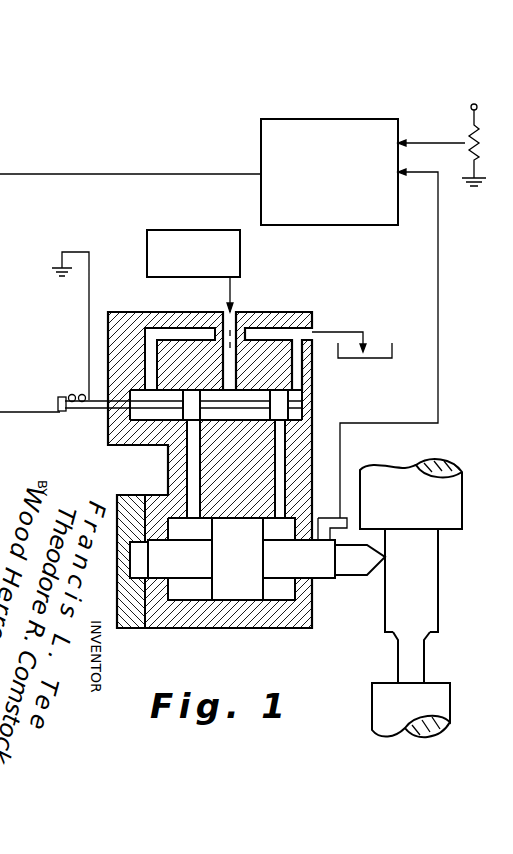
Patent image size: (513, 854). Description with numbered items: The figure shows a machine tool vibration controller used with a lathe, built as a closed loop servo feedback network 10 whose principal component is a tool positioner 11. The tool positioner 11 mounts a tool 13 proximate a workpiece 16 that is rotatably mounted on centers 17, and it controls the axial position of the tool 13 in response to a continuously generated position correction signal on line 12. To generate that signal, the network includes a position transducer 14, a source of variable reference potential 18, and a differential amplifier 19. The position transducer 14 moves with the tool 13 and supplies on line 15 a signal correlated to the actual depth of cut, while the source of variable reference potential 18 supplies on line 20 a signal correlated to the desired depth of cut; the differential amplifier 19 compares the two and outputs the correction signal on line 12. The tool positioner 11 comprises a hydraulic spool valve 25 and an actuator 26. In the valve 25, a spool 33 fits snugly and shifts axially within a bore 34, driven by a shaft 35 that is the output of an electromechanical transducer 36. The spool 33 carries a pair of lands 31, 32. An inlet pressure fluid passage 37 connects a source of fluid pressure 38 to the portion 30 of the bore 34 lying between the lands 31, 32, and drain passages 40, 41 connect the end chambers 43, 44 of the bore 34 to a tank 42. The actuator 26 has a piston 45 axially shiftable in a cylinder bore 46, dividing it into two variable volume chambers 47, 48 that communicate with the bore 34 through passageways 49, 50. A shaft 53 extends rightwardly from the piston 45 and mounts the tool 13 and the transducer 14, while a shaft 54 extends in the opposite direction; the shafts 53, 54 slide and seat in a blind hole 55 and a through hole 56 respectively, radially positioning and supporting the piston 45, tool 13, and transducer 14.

The closed loop servo feedback network 10 is at (268, 67).
The tool positioner 11 is at (108, 465).
The line 12 is at (147, 172).
The tool 13 is at (357, 570).
The position transducer 14 is at (347, 523).
The line 15 is at (438, 378).
The workpiece 16 is at (428, 586).
The centers 17 is at (416, 658).
The source of variable reference potential 18 is at (481, 124).
The differential amplifier 19 is at (340, 118).
The line 20 is at (430, 141).
The hydraulic spool valve 25 is at (258, 315).
The actuator 26 is at (213, 640).
The portion of the bore 30 is at (233, 420).
The land 31 is at (191, 403).
The land 32 is at (279, 403).
The spool 33 is at (293, 404).
The bore 34 is at (214, 428).
The shaft 35 is at (98, 412).
The electromechanical transducer 36 is at (78, 398).
The inlet pressure fluid passage 37 is at (215, 332).
The source of fluid pressure 38 is at (204, 230).
The drain passage 40 is at (152, 330).
The drain passage 41 is at (300, 372).
The tank 42 is at (404, 345).
The chamber 43 is at (157, 428).
The chamber 44 is at (300, 414).
The piston 45 is at (237, 559).
The cylinder bore 46 is at (268, 628).
The variable volume chamber 47 is at (182, 594).
The variable volume chamber 48 is at (300, 630).
The passageway 49 is at (190, 486).
The passageway 50 is at (278, 490).
The shaft 53 is at (299, 559).
The shaft 54 is at (180, 559).
The blind hole 55 is at (138, 580).
The through hole 56 is at (302, 602).